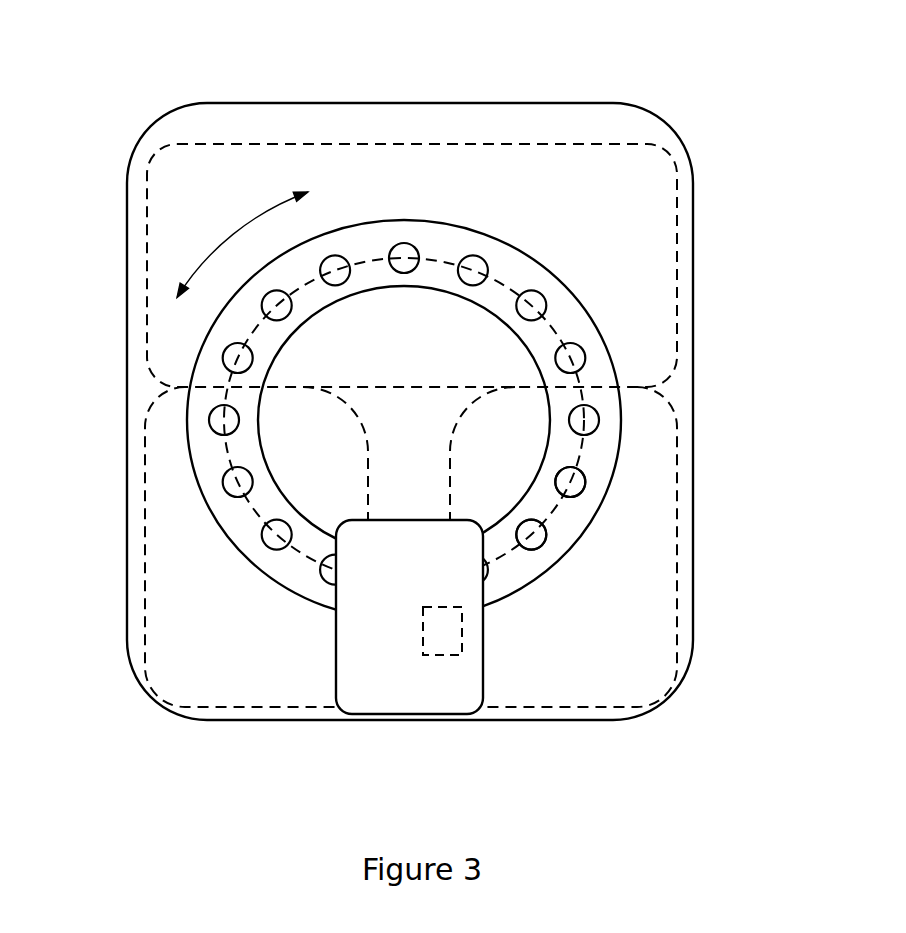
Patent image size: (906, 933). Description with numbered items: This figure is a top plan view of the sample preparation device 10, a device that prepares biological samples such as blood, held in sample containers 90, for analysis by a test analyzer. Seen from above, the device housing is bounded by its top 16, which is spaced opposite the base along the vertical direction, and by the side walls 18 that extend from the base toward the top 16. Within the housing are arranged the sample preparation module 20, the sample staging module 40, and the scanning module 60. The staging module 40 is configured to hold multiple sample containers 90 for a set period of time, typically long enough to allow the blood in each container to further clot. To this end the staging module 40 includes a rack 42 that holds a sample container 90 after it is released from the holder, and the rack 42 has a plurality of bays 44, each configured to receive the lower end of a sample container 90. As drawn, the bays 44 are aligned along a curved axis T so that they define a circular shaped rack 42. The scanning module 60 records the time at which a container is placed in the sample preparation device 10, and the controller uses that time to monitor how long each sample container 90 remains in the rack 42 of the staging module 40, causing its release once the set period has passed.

The sample preparation device 10 is at (237, 90).
The top 16 is at (125, 285).
The side walls 18 is at (693, 385).
The sample preparation module 20 is at (385, 592).
The sample staging module 40 is at (520, 235).
The rack 42 is at (578, 318).
The bays 44 is at (577, 482).
The scanning module 60 is at (462, 630).
The sample containers 90 is at (571, 490).
The curved axis T is at (578, 455).